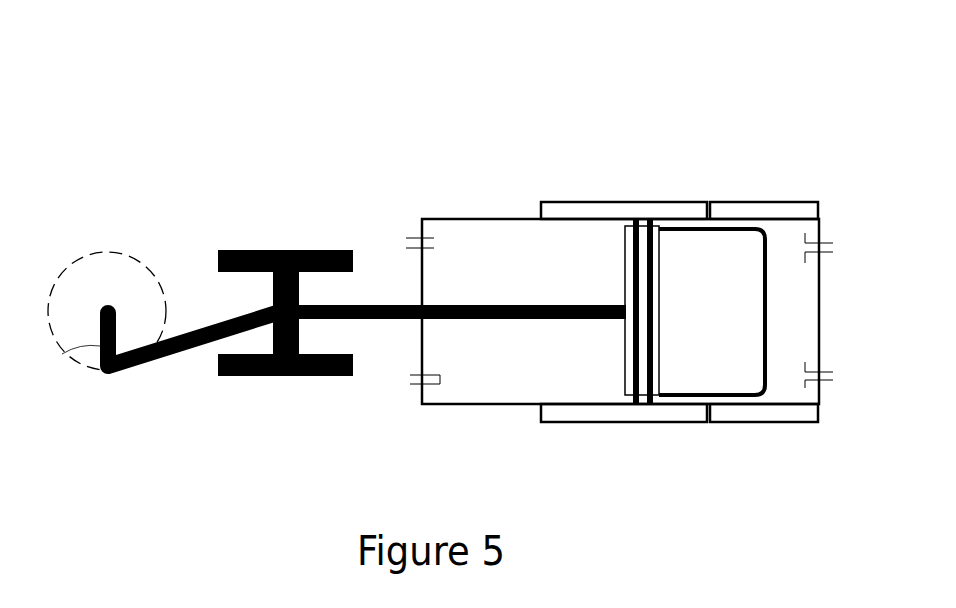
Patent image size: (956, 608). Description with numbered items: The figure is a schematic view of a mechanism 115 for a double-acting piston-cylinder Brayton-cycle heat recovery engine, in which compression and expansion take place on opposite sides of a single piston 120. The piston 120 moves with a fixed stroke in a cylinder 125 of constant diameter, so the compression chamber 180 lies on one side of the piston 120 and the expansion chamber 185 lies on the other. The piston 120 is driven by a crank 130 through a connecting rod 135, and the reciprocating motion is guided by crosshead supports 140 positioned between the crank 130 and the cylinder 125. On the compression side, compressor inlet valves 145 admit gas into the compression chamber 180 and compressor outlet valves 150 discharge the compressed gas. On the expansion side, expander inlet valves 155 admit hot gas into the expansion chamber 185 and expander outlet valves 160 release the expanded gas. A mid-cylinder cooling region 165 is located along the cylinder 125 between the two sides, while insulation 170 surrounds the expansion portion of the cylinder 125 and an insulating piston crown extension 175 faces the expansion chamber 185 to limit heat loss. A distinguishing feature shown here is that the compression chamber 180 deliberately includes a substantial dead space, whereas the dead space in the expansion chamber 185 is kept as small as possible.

The mechanism 115 is at (798, 122).
The piston 120 is at (622, 233).
The cylinder 125 is at (467, 404).
The crank 130 is at (62, 355).
The connecting rod 135 is at (172, 364).
The crosshead supports 140 is at (297, 250).
The compressor inlet valves 145 is at (398, 239).
The compressor outlet valves 150 is at (388, 387).
The expander inlet valves 155 is at (848, 235).
The expander outlet valves 160 is at (842, 387).
The mid-cylinder cooling region 165 is at (668, 201).
The insulation 170 is at (732, 201).
The insulating piston crown extension 175 is at (703, 362).
The compression chamber 180 is at (545, 355).
The expansion chamber 185 is at (796, 347).